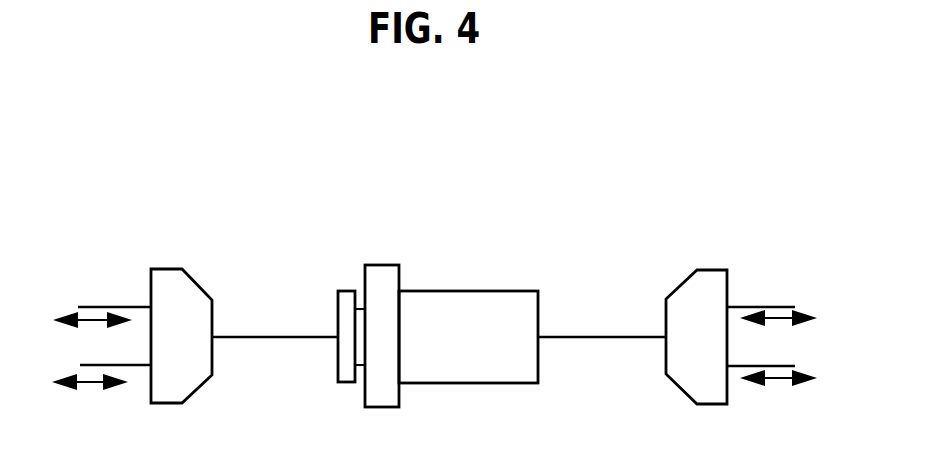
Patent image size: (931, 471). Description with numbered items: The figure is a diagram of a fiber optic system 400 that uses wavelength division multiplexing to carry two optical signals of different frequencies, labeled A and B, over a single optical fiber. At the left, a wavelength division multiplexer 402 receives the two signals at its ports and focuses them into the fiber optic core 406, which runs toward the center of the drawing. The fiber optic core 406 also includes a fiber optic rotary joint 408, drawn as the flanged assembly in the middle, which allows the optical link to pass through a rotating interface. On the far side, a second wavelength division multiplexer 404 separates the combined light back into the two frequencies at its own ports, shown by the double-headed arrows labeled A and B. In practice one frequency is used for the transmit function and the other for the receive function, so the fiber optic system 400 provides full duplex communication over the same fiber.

The fiber optic system 400 is at (165, 129).
The wavelength division multiplexer 402 is at (192, 292).
The wavelength division multiplexer 404 is at (672, 385).
The fiber optic core 406 is at (260, 333).
The fiber optic rotary joint 408 is at (487, 291).